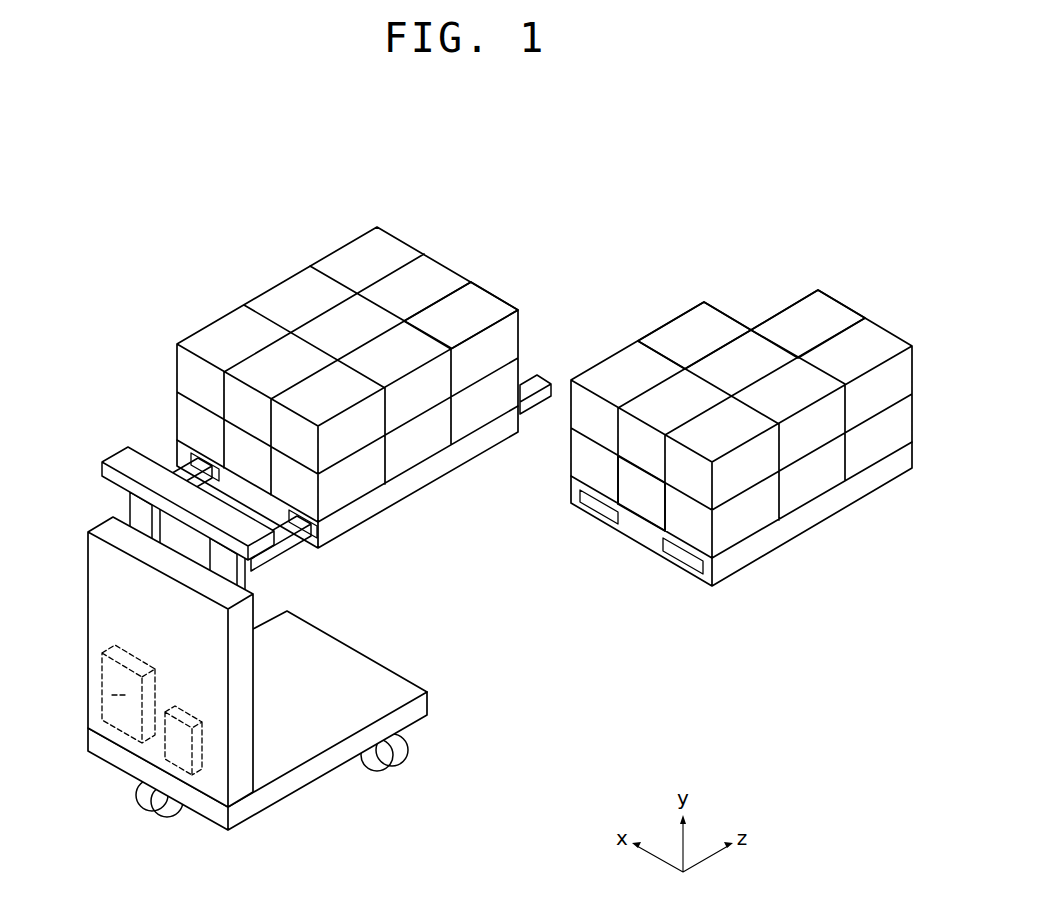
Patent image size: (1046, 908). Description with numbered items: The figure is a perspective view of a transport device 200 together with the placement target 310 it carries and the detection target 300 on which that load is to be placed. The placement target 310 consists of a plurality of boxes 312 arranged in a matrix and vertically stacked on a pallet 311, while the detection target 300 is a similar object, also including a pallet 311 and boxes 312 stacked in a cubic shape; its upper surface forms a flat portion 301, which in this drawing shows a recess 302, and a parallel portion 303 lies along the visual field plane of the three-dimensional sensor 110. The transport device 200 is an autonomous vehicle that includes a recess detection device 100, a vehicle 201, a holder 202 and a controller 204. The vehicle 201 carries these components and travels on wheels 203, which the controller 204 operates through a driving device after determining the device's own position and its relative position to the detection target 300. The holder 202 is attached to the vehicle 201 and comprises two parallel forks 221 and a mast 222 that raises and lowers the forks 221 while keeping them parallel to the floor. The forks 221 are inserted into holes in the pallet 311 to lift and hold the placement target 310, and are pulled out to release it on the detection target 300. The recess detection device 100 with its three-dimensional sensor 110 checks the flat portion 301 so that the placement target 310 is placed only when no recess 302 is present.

The recess detection device 100 is at (190, 800).
The three-dimensional sensor 110 is at (533, 374).
The transport device 200 is at (112, 582).
The vehicle 201 is at (311, 771).
The holder 202 is at (290, 548).
The wheels 203 is at (137, 792).
The controller 204 is at (128, 690).
The forks 221 is at (341, 430).
The mast 222 is at (130, 513).
The detection target 300 is at (866, 348).
The flat portion 301 is at (705, 316).
The recess 302 is at (792, 291).
The parallel portion 303 is at (645, 489).
The placement target 310 is at (375, 226).
The pallet 311 is at (404, 503).
The boxes 312 is at (457, 289).